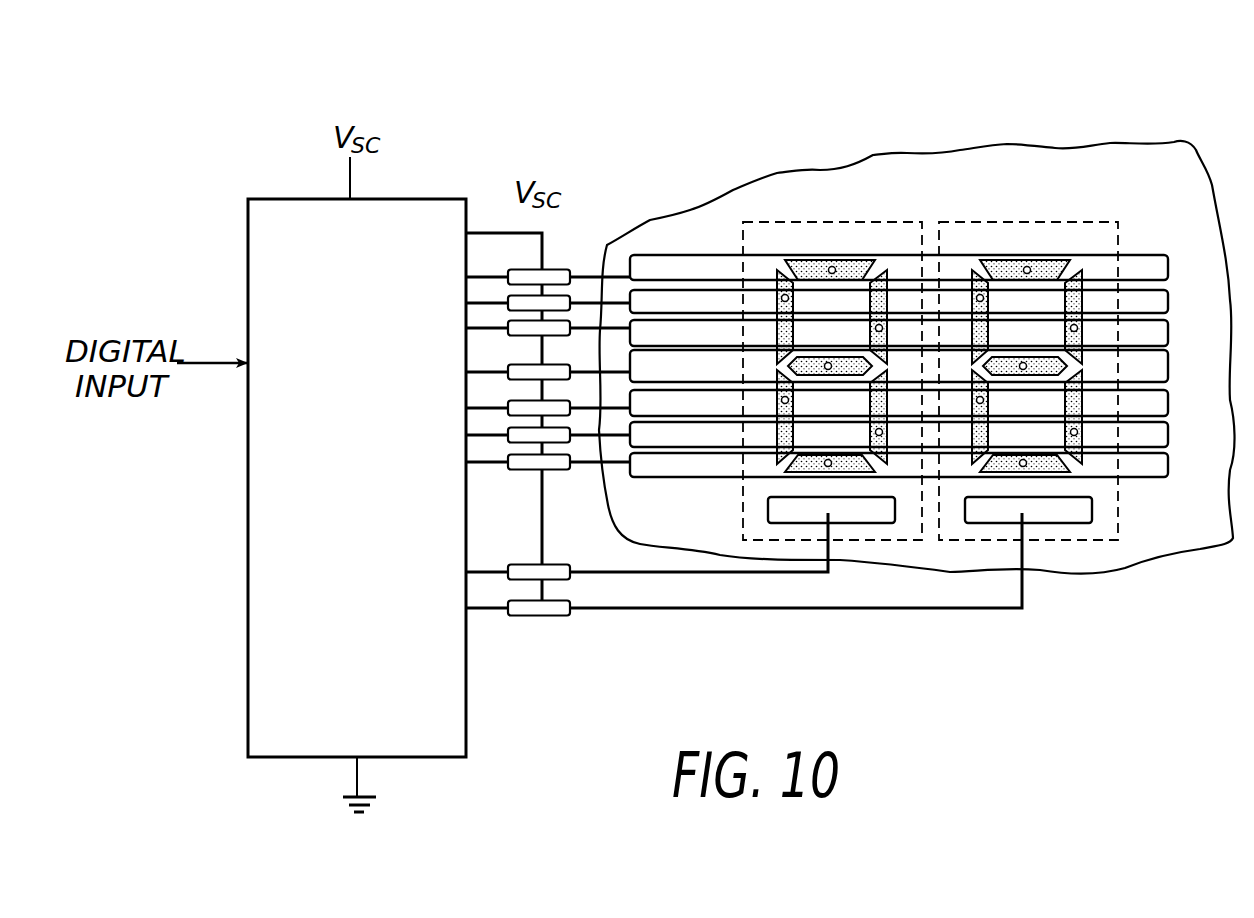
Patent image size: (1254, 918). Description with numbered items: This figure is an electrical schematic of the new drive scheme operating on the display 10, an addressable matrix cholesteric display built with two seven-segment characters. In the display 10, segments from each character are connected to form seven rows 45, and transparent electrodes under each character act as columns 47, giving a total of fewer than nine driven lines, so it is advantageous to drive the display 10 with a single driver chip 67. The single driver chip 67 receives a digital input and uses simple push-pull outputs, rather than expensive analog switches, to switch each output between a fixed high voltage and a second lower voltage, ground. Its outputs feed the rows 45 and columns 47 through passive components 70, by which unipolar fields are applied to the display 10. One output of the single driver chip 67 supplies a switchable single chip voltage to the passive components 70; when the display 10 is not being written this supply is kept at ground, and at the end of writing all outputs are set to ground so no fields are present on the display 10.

The display 10 is at (1100, 113).
The rows 45 is at (620, 438).
The columns 47 is at (705, 573).
The single driver chip 67 is at (266, 612).
The passive components 70 is at (566, 299).